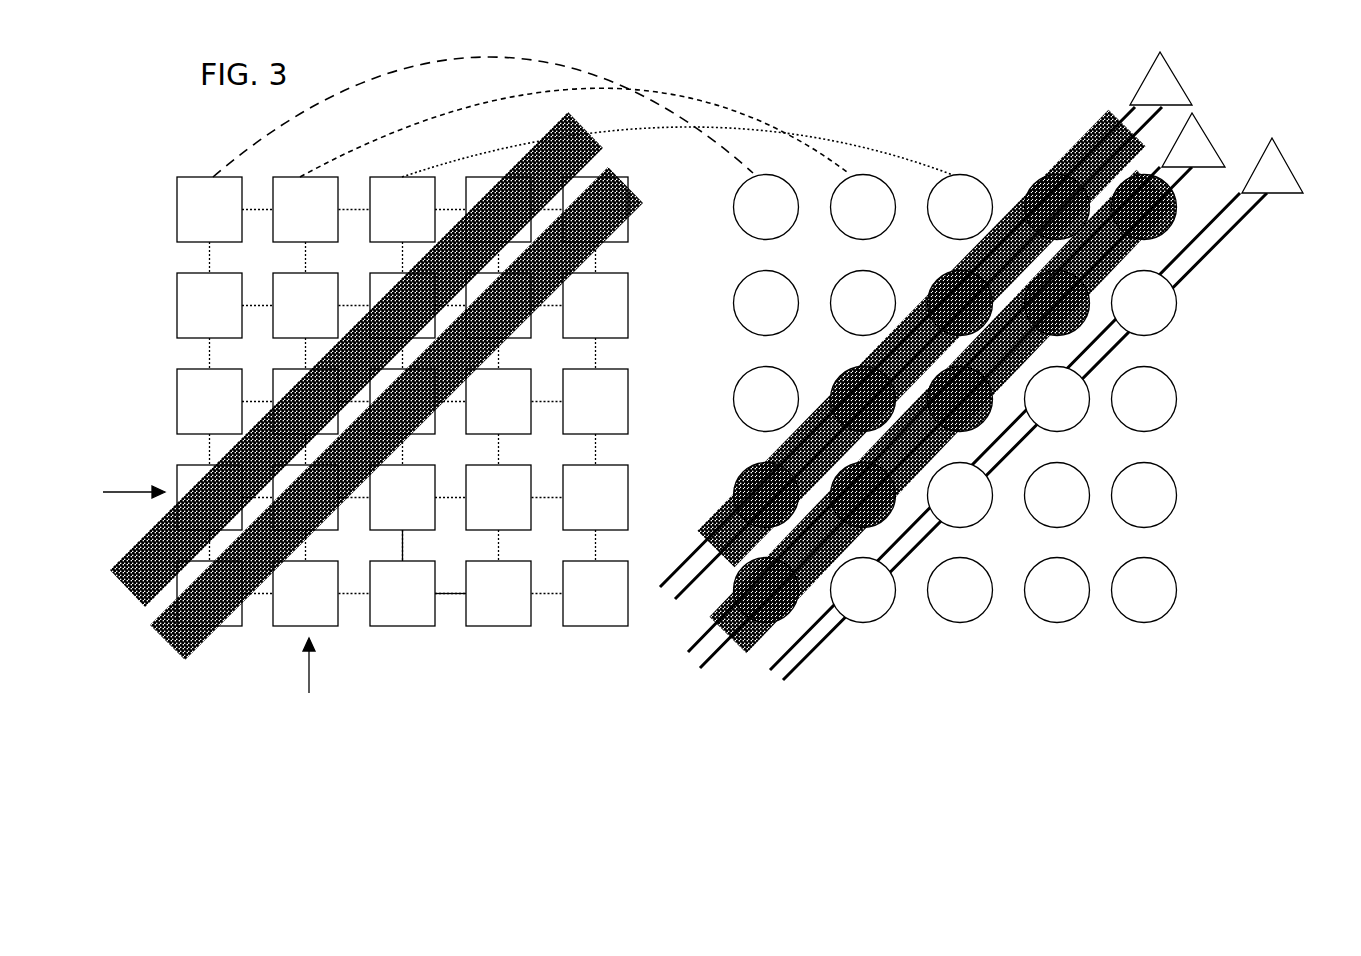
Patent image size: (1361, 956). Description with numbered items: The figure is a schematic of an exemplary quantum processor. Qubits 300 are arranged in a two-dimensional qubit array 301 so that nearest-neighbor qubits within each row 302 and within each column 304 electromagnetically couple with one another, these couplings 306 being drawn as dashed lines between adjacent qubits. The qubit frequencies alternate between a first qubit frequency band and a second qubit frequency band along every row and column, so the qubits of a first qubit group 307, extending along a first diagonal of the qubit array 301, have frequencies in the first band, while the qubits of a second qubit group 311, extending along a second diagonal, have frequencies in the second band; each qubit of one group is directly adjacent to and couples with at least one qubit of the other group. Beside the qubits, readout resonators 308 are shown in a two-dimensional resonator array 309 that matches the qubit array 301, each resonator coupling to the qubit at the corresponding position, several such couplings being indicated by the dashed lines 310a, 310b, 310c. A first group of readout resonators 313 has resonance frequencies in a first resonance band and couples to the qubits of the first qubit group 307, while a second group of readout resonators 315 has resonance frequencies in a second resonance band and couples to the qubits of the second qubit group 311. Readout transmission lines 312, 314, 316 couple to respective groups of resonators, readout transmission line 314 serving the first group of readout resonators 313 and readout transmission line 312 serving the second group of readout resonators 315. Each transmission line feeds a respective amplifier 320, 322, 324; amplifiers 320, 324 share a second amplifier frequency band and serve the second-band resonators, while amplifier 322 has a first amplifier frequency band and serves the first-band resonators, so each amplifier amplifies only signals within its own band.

The qubits 300 is at (178, 224).
The qubit array 301 is at (162, 160).
The row 302 is at (111, 492).
The column 304 is at (310, 682).
The couplings 306 is at (406, 556).
The first qubit group 307 is at (186, 642).
The readout resonators 308 is at (1168, 498).
The resonator array 309 is at (988, 150).
The dashed line 310a is at (449, 60).
The dashed line 310b is at (653, 86).
The dashed line 310c is at (818, 126).
The second qubit group 311 is at (118, 582).
The readout transmission line 312 is at (680, 566).
The first group of readout resonators 313 is at (740, 655).
The readout transmission line 314 is at (684, 654).
The second group of readout resonators 315 is at (708, 530).
The readout transmission line 316 is at (785, 680).
The amplifier 320 is at (1165, 74).
The amplifier 322 is at (1202, 136).
The amplifier 324 is at (1270, 160).